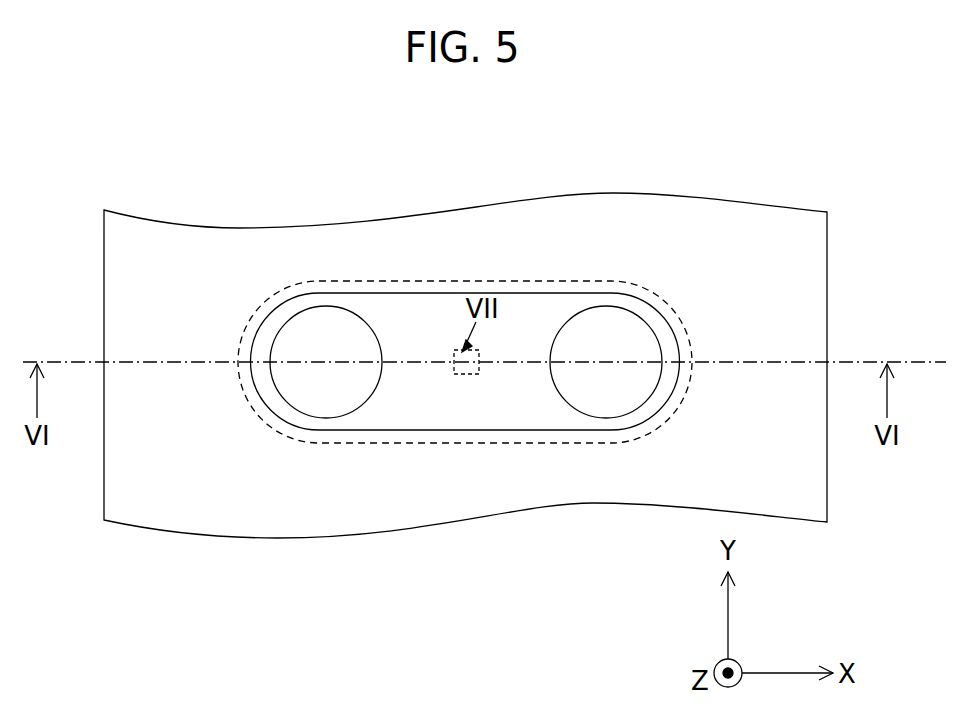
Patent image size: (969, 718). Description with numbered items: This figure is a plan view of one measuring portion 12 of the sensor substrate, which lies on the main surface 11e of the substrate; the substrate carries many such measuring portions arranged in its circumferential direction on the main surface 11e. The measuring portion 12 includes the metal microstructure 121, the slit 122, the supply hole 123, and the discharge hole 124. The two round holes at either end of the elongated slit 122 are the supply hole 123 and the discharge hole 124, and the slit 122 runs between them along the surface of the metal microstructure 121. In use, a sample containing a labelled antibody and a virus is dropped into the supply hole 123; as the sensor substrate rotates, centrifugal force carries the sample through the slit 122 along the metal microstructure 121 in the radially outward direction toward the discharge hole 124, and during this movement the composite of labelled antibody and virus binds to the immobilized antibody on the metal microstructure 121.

The measuring portion 12 is at (413, 259).
The main surface 11e is at (803, 252).
The metal microstructure 121 is at (476, 280).
The slit 122 is at (408, 435).
The supply hole 123 is at (273, 342).
The discharge hole 124 is at (628, 310).